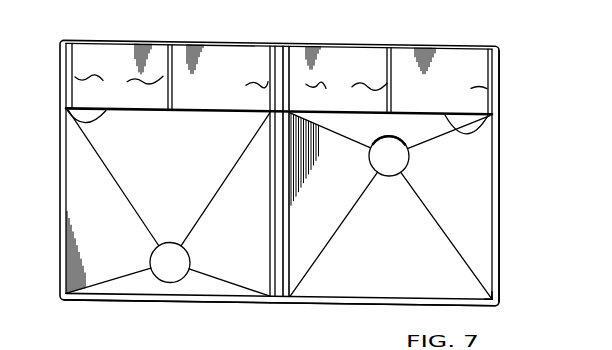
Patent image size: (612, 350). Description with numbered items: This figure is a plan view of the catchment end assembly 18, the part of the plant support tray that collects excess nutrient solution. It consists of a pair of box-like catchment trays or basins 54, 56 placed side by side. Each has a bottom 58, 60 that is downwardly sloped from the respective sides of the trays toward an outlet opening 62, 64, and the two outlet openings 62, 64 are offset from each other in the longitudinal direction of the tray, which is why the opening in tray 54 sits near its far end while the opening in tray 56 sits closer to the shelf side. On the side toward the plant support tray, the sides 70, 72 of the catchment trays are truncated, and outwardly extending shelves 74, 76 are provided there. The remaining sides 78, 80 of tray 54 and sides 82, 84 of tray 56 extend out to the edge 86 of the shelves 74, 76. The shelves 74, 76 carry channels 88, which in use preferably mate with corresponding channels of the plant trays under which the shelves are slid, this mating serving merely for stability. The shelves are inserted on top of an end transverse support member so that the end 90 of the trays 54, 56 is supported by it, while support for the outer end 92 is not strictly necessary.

The catchment end assembly 18 is at (60, 197).
The catchment tray 54 is at (104, 302).
The catchment tray 56 is at (372, 309).
The bottom 58 is at (132, 154).
The bottom 60 is at (383, 258).
The outlet opening 62 is at (164, 271).
The outlet opening 64 is at (394, 156).
The side 70 is at (68, 117).
The side 72 is at (490, 118).
The shelf 74 is at (115, 57).
The shelf 76 is at (368, 60).
The side 78 is at (63, 152).
The side 80 is at (276, 163).
The side 82 is at (288, 207).
The side 84 is at (500, 162).
The edge of shelves 86 is at (229, 41).
The channels 88 is at (281, 87).
The end of the trays 90 is at (500, 71).
The outer end 92 is at (500, 302).